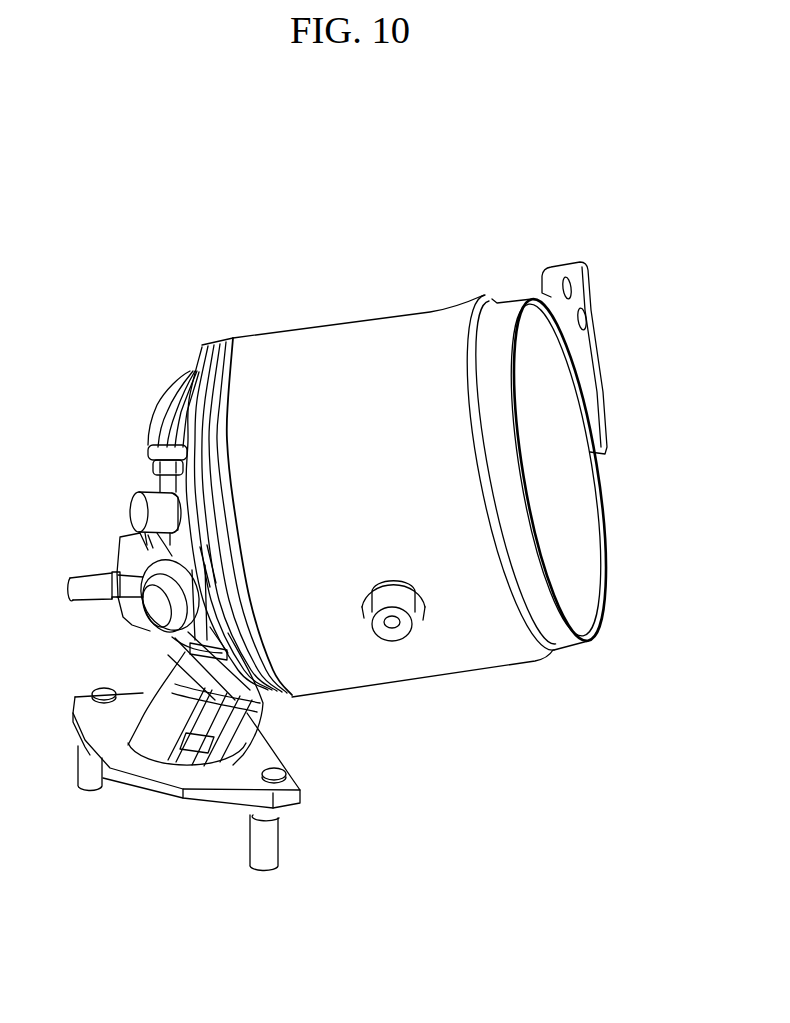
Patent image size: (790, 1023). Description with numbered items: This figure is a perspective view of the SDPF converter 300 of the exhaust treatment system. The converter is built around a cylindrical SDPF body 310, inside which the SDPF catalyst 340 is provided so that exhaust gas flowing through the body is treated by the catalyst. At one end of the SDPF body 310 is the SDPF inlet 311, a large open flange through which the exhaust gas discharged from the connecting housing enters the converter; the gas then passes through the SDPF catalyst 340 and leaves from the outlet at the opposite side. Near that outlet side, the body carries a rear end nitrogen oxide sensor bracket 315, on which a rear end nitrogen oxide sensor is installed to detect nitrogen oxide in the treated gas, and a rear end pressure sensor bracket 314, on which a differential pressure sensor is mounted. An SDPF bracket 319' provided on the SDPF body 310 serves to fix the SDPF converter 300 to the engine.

The SDPF converter 300 is at (248, 304).
The SDPF body 310 is at (485, 642).
The SDPF inlet 311 is at (590, 640).
The SDPF catalyst 340 is at (575, 502).
The SDPF bracket 319' is at (611, 351).
The rear end pressure sensor bracket 314 is at (157, 503).
The rear end nitrogen oxide sensor bracket 315 is at (150, 632).